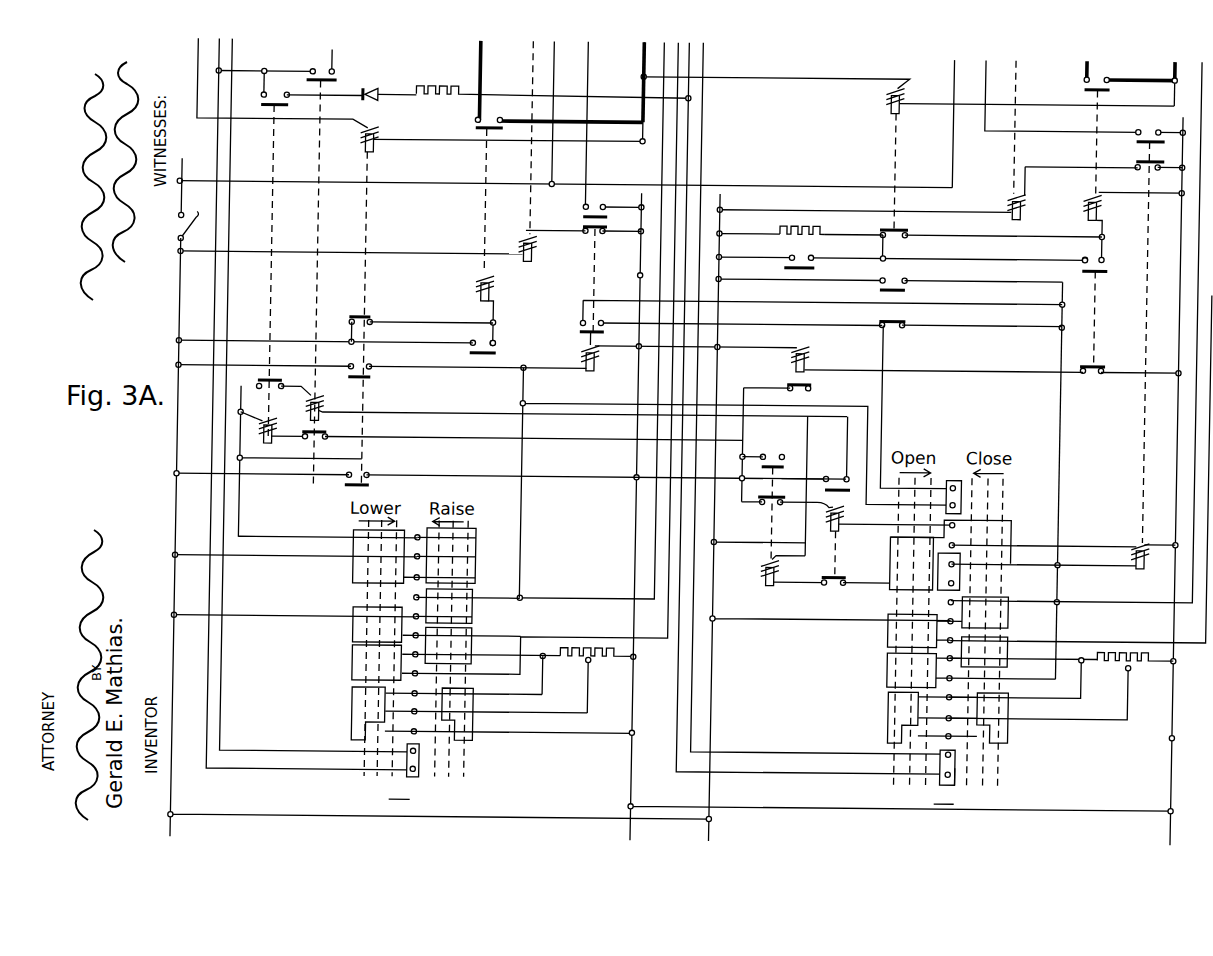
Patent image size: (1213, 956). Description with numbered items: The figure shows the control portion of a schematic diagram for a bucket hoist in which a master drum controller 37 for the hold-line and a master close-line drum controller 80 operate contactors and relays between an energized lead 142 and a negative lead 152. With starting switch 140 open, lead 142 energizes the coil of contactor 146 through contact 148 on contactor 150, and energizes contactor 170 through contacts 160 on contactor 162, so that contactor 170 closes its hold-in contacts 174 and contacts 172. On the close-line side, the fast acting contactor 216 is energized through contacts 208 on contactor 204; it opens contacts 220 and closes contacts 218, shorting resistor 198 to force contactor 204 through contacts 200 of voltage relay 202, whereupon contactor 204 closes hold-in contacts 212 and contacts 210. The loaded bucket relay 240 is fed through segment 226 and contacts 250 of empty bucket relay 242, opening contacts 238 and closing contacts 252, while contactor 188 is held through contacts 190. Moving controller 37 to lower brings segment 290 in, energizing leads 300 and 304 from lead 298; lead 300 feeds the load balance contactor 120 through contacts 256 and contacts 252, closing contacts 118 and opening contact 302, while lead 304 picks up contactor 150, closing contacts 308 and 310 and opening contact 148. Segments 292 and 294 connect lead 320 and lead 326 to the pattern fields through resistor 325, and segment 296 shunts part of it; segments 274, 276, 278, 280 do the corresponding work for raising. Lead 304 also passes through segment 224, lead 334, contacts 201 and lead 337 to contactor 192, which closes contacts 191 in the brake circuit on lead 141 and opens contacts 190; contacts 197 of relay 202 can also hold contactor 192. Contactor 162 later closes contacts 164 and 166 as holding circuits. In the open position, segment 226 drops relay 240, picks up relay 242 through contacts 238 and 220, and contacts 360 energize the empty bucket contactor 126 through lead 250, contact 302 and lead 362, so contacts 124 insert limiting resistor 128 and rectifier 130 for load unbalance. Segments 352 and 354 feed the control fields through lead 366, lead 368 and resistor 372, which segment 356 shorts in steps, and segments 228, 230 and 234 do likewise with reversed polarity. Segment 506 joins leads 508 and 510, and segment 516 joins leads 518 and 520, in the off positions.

The master drum controller 37 is at (399, 791).
The master close-line drum controller 80 is at (944, 777).
The contacts 118 is at (276, 64).
The load balance contactor 120 is at (315, 222).
The contacts 124 is at (281, 86).
The empty bucket contactor 126 is at (269, 222).
The limiting resistor 128 is at (432, 85).
The rectifier 130 is at (362, 92).
The starting switch 140 is at (190, 219).
The lead 141 is at (403, 187).
The lead 142 is at (716, 708).
The contactor 146 is at (525, 69).
The contact 148 is at (577, 229).
The contactor 150 is at (588, 262).
The lead 152 is at (637, 708).
The contacts 160 is at (367, 322).
The contactor 162 is at (363, 222).
The contacts 164 is at (370, 381).
The contacts 166 is at (370, 479).
The contactor 170 is at (481, 221).
The contacts 172 is at (559, 85).
The hold in contacts 174 is at (489, 353).
The contactor 188 is at (1012, 70).
The contacts 190 is at (1134, 167).
The contacts 191 is at (1134, 140).
The contactor 192 is at (1143, 452).
The contacts 197 is at (900, 288).
The resistor 198 is at (776, 230).
The contacts 200 is at (902, 228).
The contacts 201 is at (894, 325).
The voltage relay 202 is at (892, 148).
The contactor 204 is at (1093, 318).
The contacts 208 is at (1098, 363).
The contacts 210 is at (1093, 86).
The hold in contacts 212 is at (1103, 270).
The contactor 216 is at (792, 287).
The contacts 218 is at (781, 266).
The contacts 220 is at (785, 385).
The segment 224 is at (970, 497).
The segment 226 is at (1013, 536).
The segment 228 is at (1010, 599).
The segment 230 is at (1008, 640).
The segment 234 is at (1010, 740).
The contacts 238 is at (832, 583).
The loaded bucket relay 240 is at (836, 556).
The empty bucket relay 242 is at (772, 534).
The contacts 250 is at (368, 473).
The contacts 252 is at (835, 478).
The contacts 256 is at (290, 380).
The segment 274 is at (478, 558).
The segment 276 is at (476, 609).
The segment 278 is at (471, 636).
The segment 280 is at (474, 740).
The segment 290 is at (355, 575).
The segment 292 is at (356, 629).
The segment 294 is at (356, 663).
The segment 296 is at (356, 708).
The lead 298 is at (306, 559).
The lead 300 is at (307, 539).
The contact 302 is at (318, 439).
The lead 304 is at (525, 512).
The contacts 308 is at (578, 217).
The contacts 310 is at (576, 328).
The lead 320 is at (582, 636).
The resistor 325 is at (598, 663).
The lead 326 is at (640, 66).
The lead 334 is at (882, 407).
The lead 337 is at (1060, 420).
The segment 352 is at (891, 632).
The segment 354 is at (891, 663).
The segment 356 is at (893, 710).
The contacts 360 is at (784, 452).
The lead 362 is at (557, 439).
The lead 366 is at (1135, 640).
The lead 368 is at (1115, 597).
The resistor 372 is at (1130, 666).
The segment 506 is at (426, 779).
The lead 508 is at (306, 753).
The lead 510 is at (302, 771).
The segment 516 is at (966, 783).
The lead 518 is at (804, 750).
The lead 520 is at (800, 768).